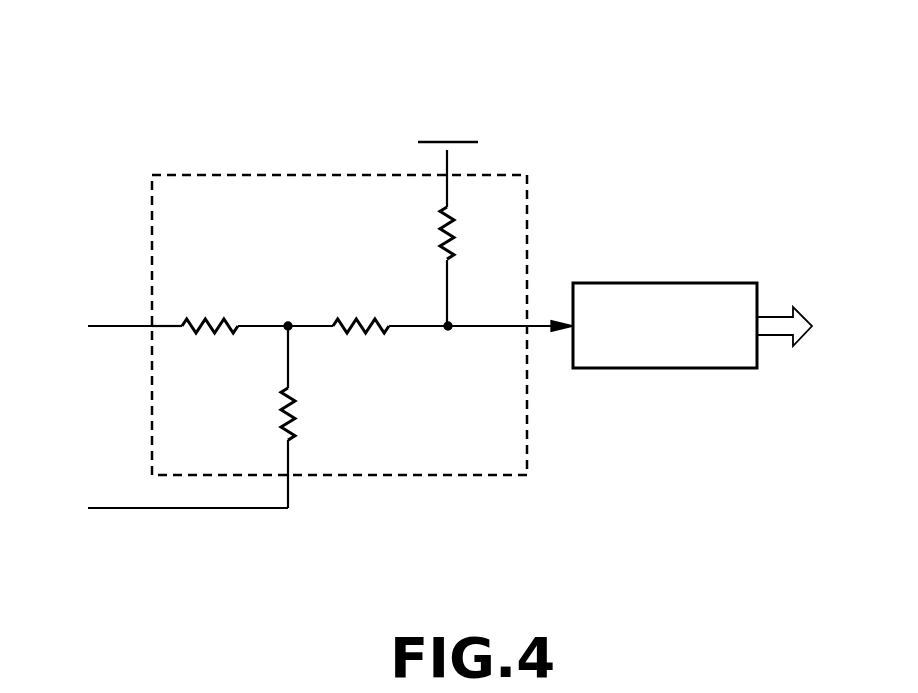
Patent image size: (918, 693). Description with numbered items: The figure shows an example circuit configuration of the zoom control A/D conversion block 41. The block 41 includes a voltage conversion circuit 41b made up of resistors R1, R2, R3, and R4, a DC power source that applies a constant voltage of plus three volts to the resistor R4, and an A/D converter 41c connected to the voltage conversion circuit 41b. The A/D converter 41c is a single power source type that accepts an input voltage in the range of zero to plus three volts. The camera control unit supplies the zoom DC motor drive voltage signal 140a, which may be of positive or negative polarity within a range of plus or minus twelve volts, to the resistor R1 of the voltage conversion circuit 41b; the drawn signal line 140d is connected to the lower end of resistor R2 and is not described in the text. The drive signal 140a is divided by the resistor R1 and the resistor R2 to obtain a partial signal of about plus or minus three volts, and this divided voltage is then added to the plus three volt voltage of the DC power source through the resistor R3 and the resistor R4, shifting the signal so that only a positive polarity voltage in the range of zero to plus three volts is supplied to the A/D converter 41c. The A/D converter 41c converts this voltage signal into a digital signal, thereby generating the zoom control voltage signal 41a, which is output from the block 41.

The zoom control A/D conversion block 41 is at (653, 142).
The zoom control voltage signal 41a is at (815, 326).
The voltage conversion circuit 41b is at (243, 173).
The A/D converter 41c is at (672, 283).
The zoom DC motor drive voltage signal 140a is at (81, 323).
The reference signal line 140d is at (149, 507).
The resistor R1 is at (210, 312).
The resistor R2 is at (306, 417).
The resistor R3 is at (361, 312).
The resistor R4 is at (456, 220).